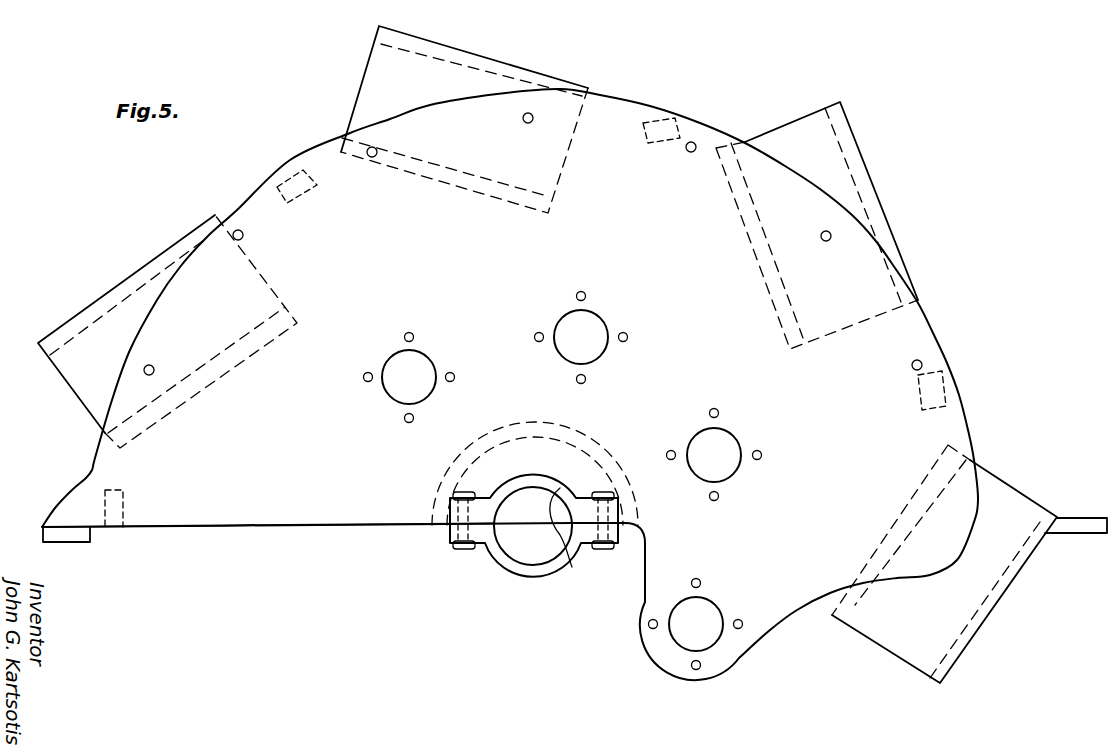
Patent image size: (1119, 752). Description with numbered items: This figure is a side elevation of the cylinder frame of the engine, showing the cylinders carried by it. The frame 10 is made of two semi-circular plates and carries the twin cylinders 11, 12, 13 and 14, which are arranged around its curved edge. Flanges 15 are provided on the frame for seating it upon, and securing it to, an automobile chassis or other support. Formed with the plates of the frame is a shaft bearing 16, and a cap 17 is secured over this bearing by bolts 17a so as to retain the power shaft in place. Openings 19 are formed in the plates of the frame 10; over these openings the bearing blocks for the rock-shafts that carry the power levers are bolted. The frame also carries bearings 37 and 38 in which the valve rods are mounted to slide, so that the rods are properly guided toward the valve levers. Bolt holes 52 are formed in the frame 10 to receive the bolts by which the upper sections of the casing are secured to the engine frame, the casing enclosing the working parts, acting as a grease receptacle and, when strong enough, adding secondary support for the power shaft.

The frame 10 is at (918, 332).
The twin cylinder 11 is at (1013, 578).
The twin cylinder 12 is at (453, 53).
The twin cylinder 13 is at (143, 272).
The twin cylinder 14 is at (850, 142).
The flange 15 is at (63, 545).
The shaft bearing 16 is at (542, 541).
The cap 17 is at (500, 567).
The bolt 17a is at (612, 555).
The opening 19 is at (392, 392).
The bearing 37 is at (98, 492).
The bearing 38 is at (428, 527).
The bolt hole 52 is at (144, 372).